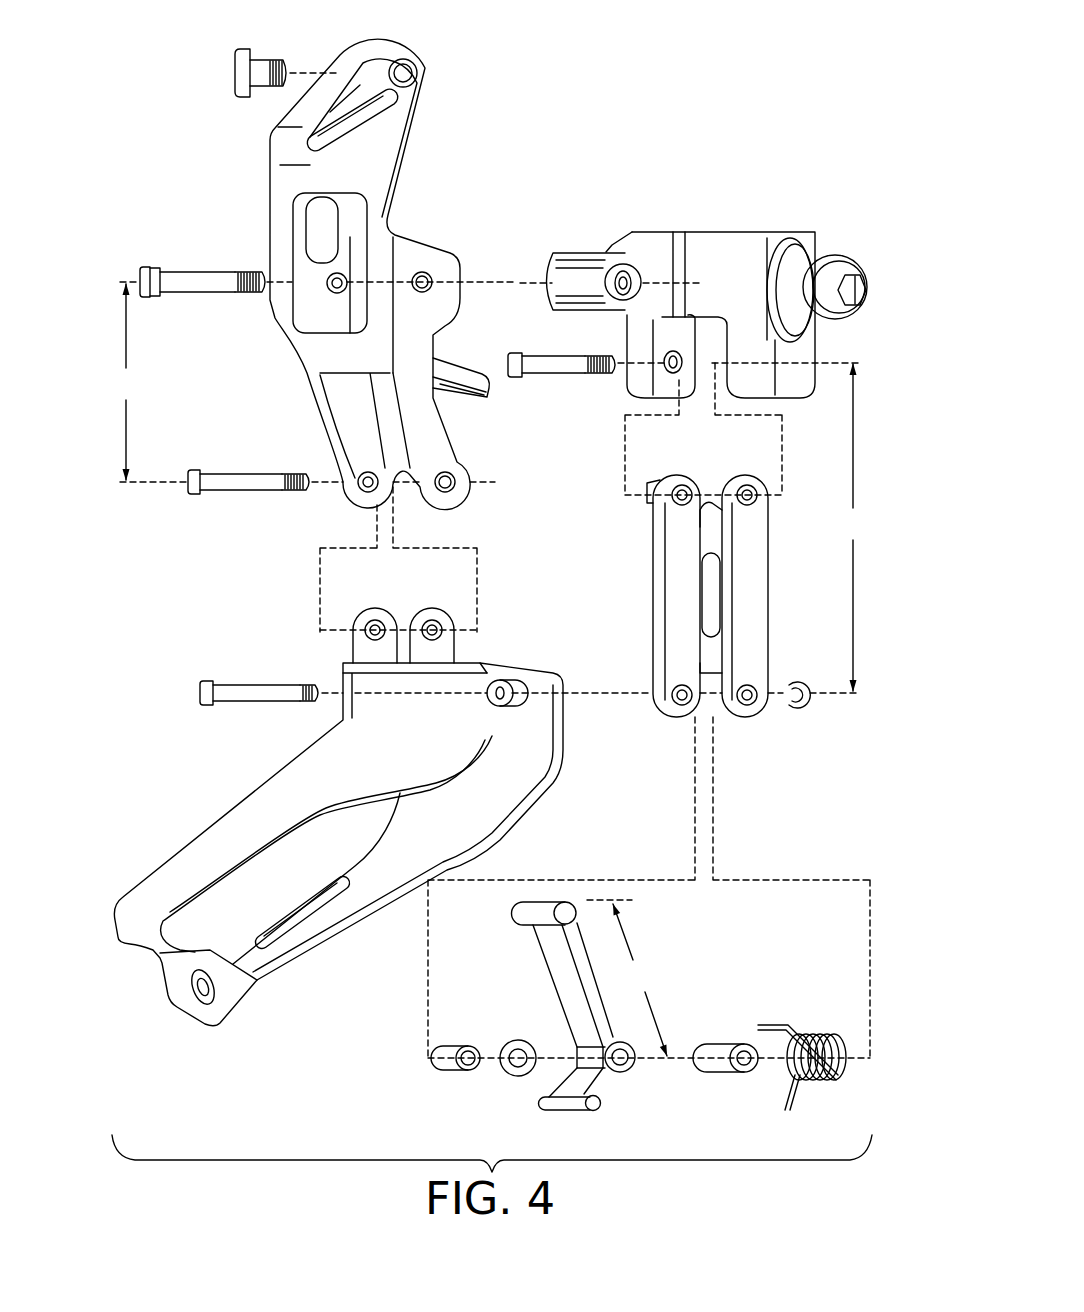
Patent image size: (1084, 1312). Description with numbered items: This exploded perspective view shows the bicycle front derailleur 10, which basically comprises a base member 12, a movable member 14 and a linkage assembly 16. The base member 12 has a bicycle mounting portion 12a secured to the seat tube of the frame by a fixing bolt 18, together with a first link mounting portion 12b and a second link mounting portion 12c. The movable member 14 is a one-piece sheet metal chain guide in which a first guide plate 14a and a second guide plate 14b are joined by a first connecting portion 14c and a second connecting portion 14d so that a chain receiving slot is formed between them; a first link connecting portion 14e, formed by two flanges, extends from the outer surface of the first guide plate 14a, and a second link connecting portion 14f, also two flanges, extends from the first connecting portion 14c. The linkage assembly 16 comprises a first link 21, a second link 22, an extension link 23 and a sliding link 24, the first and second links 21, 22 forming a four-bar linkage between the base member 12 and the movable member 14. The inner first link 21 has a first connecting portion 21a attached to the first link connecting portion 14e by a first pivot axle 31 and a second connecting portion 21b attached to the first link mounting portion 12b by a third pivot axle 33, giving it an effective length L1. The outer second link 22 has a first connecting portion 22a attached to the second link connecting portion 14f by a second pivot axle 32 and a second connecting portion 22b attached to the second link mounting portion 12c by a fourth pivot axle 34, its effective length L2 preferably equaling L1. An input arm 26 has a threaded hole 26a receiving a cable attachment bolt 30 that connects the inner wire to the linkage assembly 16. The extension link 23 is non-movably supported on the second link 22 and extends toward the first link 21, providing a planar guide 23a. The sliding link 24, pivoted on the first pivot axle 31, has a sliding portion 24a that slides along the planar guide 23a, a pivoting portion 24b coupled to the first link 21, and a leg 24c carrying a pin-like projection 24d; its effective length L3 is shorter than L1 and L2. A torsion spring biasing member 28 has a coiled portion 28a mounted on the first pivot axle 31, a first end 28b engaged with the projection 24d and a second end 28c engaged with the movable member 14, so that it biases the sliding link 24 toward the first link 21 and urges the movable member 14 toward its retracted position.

The bicycle front derailleur 10 is at (630, 160).
The base member 12 is at (721, 225).
The bicycle mounting portion 12a is at (787, 255).
The first link mounting portion 12b is at (638, 372).
The second link mounting portion 12c is at (600, 252).
The movable member 14 is at (268, 778).
The first guide plate 14a is at (377, 862).
The second guide plate 14b is at (193, 860).
The first connecting portion 14c is at (488, 667).
The second connecting portion 14d is at (163, 958).
The first link connecting portion 14e is at (528, 708).
The second link connecting portion 14f is at (424, 608).
The linkage assembly 16 is at (638, 580).
The fixing bolt 18 is at (833, 262).
The first link 21 is at (647, 613).
The first connecting portion 21a is at (752, 708).
The second connecting portion 21b is at (742, 482).
The second link 22 is at (398, 220).
The first connecting portion 22a is at (368, 462).
The second connecting portion 22b is at (360, 273).
The extension link 23 is at (446, 372).
The planar guide 23a is at (457, 392).
The sliding link 24 is at (535, 955).
The sliding portion 24a is at (532, 912).
The pivoting portion 24b is at (585, 1055).
The leg 24c is at (565, 1088).
The projection 24d is at (580, 1102).
The input arm 26 is at (372, 60).
The threaded hole 26a is at (417, 75).
The biasing member 28 is at (822, 1030).
The coiled portion 28a is at (838, 1078).
The first end 28b is at (790, 1088).
The second end 28c is at (768, 1025).
The cable attachment bolt 30 is at (235, 76).
The first pivot axle 31 is at (254, 684).
The second pivot axle 32 is at (236, 470).
The third pivot axle 33 is at (552, 362).
The fourth pivot axle 34 is at (198, 275).
The effective length of first link L1 is at (853, 527).
The effective length of second link L2 is at (131, 382).
The effective length of sliding link L3 is at (640, 980).